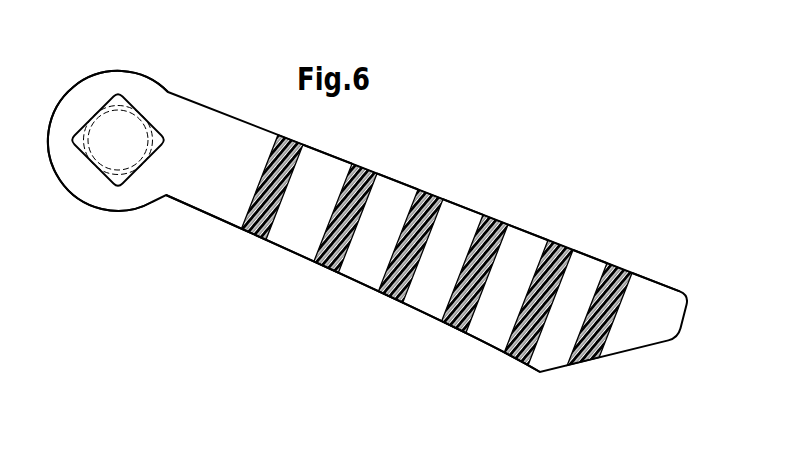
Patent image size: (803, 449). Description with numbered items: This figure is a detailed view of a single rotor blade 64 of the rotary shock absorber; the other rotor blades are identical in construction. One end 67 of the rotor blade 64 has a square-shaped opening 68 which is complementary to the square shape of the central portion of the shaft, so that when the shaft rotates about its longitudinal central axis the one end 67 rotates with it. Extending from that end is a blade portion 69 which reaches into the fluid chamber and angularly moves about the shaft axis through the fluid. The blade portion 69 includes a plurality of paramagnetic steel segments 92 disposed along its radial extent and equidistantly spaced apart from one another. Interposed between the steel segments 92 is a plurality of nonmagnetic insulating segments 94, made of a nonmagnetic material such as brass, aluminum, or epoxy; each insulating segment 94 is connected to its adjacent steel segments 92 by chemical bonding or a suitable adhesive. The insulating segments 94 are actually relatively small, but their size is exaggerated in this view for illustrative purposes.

The rotor blade 64 is at (222, 263).
The one end of the rotor blade 67 is at (85, 67).
The square-shaped opening 68 is at (113, 173).
The blade portion 69 is at (355, 283).
The paramagnetic steel segments 92 is at (558, 357).
The nonmagnetic insulating segments 94 is at (492, 230).